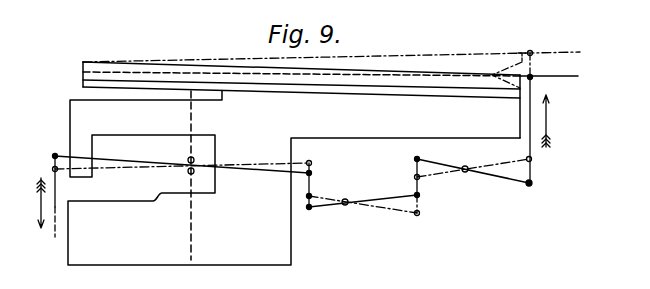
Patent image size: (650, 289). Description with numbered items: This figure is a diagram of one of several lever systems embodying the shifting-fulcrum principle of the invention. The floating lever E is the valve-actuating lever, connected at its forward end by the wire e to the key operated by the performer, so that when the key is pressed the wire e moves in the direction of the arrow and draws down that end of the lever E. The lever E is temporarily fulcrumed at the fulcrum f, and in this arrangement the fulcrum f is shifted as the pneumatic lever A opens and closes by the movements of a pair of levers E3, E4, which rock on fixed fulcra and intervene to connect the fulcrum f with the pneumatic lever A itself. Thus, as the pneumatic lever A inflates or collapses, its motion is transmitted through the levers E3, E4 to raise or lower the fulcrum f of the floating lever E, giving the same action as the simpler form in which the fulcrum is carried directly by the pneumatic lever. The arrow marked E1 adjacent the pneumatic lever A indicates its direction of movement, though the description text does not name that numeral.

The pneumatic lever A is at (331, 61).
The floating lever E is at (260, 172).
The vertical rod with motion arrow E1 is at (539, 118).
The lever rocking on fixed fulcrum E3 is at (363, 189).
The lever rocking on fixed fulcrum E4 is at (473, 177).
The wire e is at (56, 186).
The fulcrum f is at (532, 185).